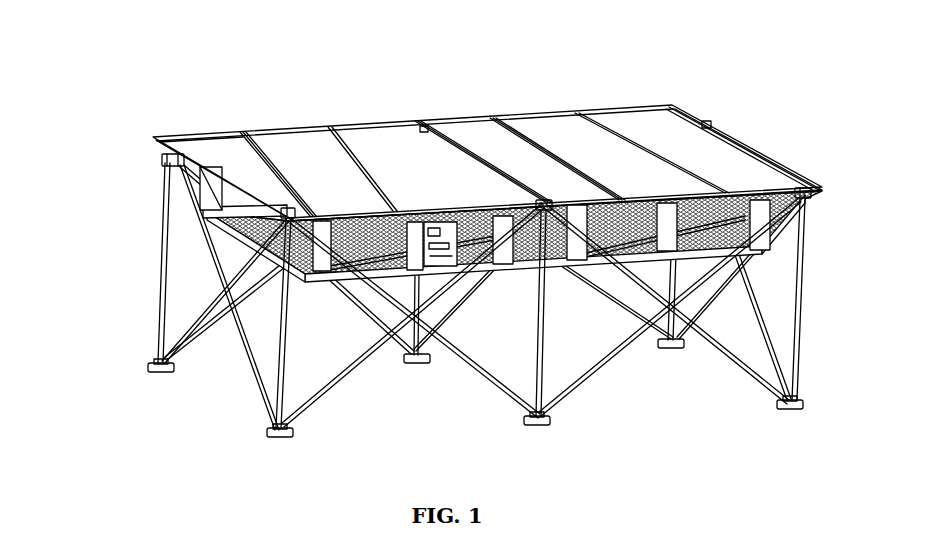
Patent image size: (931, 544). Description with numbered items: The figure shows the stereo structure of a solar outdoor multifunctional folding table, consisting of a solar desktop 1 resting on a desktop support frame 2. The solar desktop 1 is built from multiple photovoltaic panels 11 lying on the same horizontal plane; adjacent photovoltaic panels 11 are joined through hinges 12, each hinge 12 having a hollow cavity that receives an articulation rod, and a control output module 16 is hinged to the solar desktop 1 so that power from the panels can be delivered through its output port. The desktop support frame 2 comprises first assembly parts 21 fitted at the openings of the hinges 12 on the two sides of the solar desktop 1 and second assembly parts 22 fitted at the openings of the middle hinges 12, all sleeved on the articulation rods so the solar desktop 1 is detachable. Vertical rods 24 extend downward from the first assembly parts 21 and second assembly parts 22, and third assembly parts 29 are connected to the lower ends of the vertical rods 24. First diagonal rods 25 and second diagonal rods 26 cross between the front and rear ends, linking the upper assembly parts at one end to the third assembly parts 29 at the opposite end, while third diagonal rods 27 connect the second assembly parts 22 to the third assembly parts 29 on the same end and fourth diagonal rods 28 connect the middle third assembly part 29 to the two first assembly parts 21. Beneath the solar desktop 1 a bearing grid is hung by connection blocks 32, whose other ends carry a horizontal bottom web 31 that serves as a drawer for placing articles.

The solar desktop 1 is at (707, 126).
The photovoltaic panel 11 is at (245, 160).
The hinge 12 is at (458, 150).
The control output module 16 is at (424, 126).
The connection block 32 is at (400, 188).
The second assembly part 22 is at (543, 202).
The first assembly part 21 is at (160, 154).
The desktop support frame 2 is at (803, 283).
The vertical rod 24 is at (288, 355).
The first diagonal rod 25 is at (157, 372).
The second diagonal rod 26 is at (250, 397).
The third diagonal rod 27 is at (357, 373).
The fourth diagonal rod 28 is at (500, 397).
The third assembly part 29 is at (547, 420).
The bottom web 31 is at (283, 226).